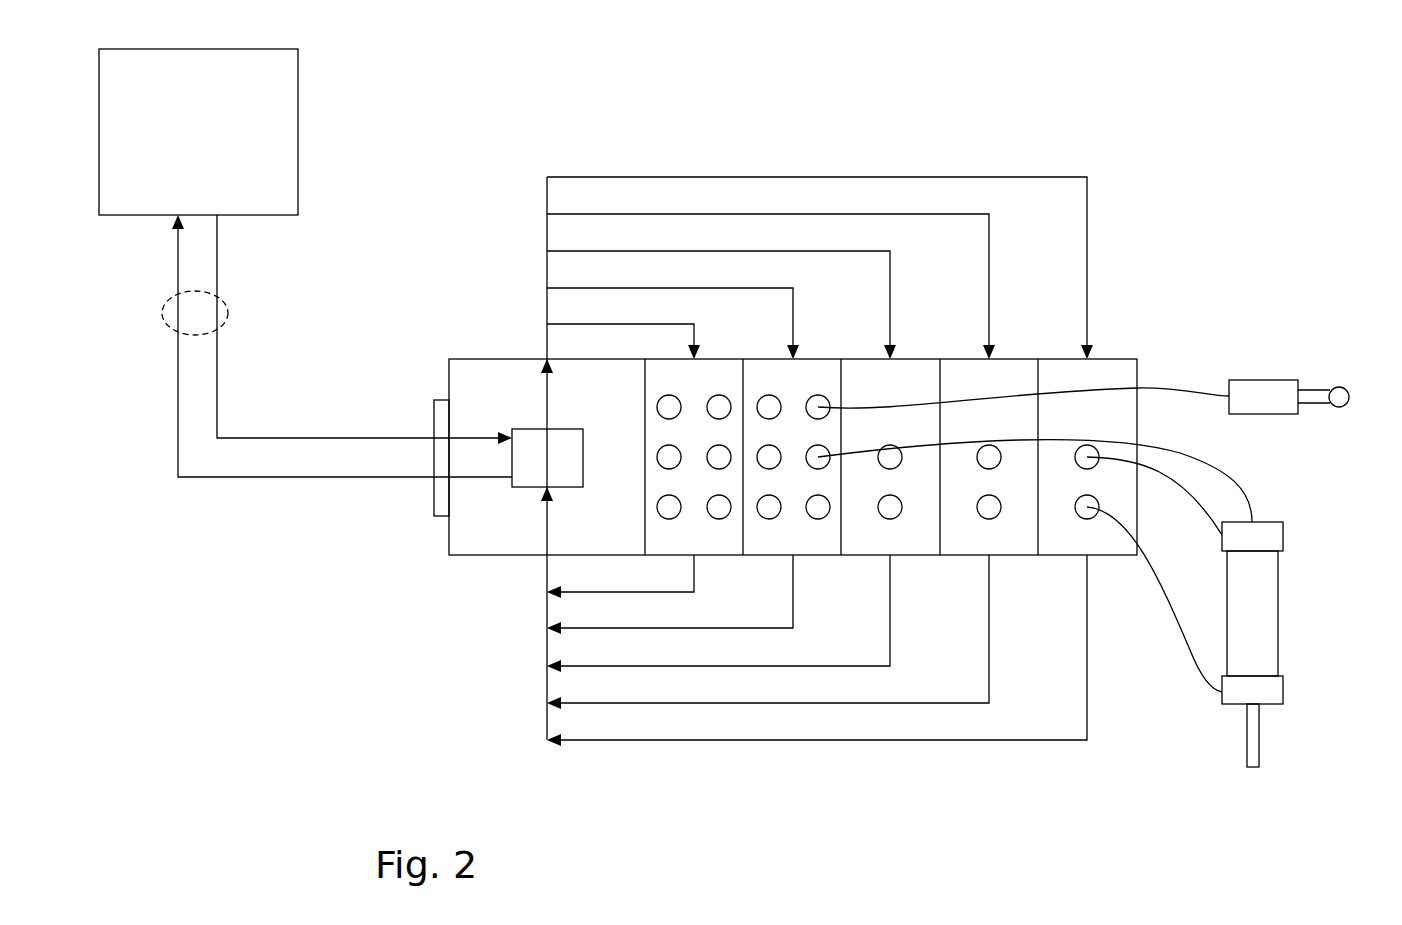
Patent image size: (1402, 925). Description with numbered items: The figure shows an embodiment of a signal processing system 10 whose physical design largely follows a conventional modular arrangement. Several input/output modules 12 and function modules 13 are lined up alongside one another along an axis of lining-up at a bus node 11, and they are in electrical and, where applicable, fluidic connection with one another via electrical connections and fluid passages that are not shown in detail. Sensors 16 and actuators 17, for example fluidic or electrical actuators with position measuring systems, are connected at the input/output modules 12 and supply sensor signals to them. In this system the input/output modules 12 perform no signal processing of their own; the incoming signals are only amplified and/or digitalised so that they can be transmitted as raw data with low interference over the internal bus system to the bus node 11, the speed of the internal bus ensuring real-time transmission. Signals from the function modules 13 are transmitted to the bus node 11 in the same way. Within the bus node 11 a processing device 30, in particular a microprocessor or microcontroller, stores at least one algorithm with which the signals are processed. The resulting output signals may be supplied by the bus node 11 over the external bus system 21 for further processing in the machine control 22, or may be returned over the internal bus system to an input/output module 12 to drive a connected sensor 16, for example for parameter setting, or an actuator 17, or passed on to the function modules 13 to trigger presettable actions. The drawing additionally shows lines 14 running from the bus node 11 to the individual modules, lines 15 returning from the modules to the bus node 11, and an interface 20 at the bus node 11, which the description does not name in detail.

The signal processing system 10 is at (500, 230).
The bus node 11 is at (497, 527).
The input/output modules 12 is at (720, 378).
The function modules 13 is at (912, 378).
The control lines to modules 14 is at (613, 324).
The return lines from modules 15 is at (607, 592).
The sensors 16 is at (1262, 395).
The actuators 17 is at (1253, 613).
The interface connector 20 is at (440, 498).
The external bus system 21 is at (165, 320).
The machine control 22 is at (305, 263).
The processing device 30 is at (535, 445).